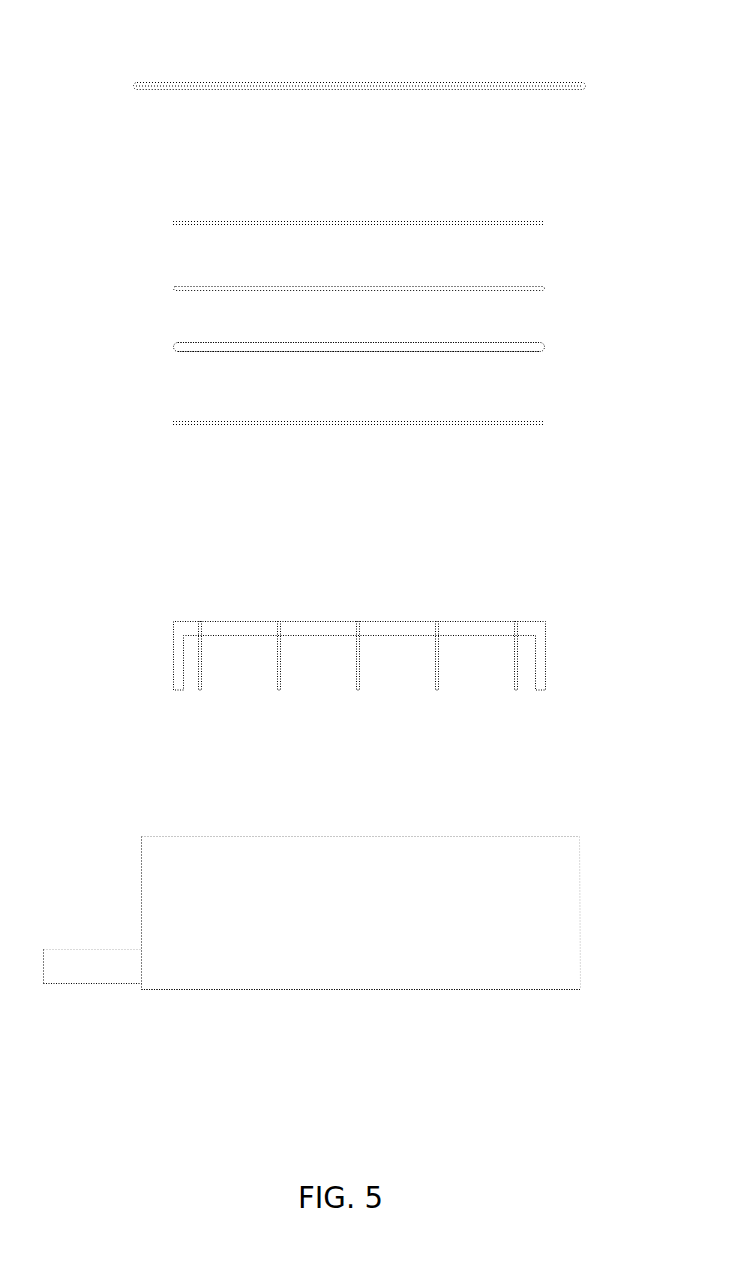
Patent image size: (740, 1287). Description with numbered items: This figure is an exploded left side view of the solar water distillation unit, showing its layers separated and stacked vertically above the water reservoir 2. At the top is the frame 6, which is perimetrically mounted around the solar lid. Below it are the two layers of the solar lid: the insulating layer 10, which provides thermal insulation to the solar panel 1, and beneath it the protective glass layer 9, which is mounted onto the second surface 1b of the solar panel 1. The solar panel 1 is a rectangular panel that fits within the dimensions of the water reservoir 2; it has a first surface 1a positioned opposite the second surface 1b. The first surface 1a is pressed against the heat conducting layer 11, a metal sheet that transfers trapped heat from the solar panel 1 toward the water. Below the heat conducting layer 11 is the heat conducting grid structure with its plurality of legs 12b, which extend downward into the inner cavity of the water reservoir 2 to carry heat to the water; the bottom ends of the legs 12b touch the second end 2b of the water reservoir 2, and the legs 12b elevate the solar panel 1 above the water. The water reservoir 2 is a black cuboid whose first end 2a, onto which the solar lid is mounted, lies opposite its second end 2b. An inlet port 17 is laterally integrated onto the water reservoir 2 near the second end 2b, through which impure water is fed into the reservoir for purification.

The frame 6 is at (580, 85).
The insulating layer 10 is at (540, 222).
The protective glass layer 9 is at (540, 288).
The solar panel 1 is at (543, 349).
The second surface 1b is at (186, 341).
The first surface 1a is at (186, 352).
The heat conducting layer 11 is at (540, 421).
The plurality of legs 12b is at (541, 680).
The water reservoir 2 is at (566, 940).
The first end 2a is at (152, 836).
The second end 2b is at (551, 990).
The inlet port 17 is at (77, 976).